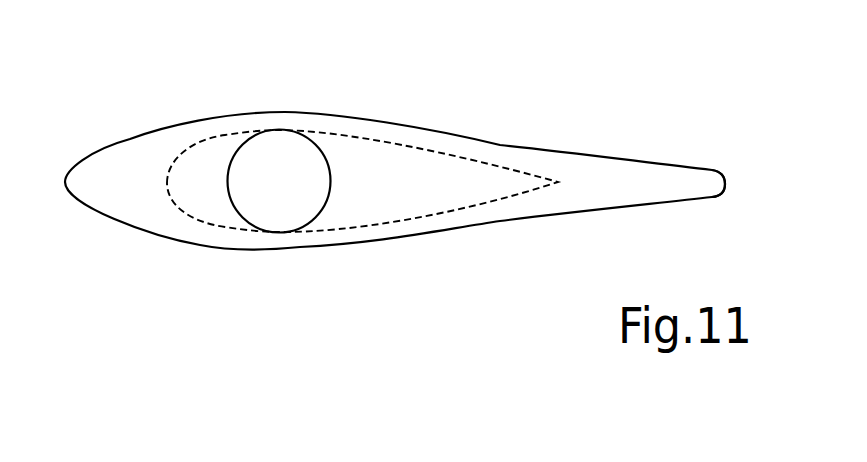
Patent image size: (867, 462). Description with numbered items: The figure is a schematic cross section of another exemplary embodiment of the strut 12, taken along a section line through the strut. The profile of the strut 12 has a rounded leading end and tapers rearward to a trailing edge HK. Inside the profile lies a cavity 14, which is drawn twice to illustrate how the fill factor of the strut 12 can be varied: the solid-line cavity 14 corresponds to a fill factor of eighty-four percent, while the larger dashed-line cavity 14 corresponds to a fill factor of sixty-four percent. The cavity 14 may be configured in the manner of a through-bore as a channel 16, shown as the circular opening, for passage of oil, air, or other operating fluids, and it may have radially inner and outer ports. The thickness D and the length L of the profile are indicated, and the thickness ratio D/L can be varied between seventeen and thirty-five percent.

The strut 12 is at (160, 127).
The cavity 14 is at (278, 120).
The channel 16 is at (329, 139).
The trailing edge HK is at (727, 183).
The thickness D is at (46, 125).
The length L is at (723, 274).